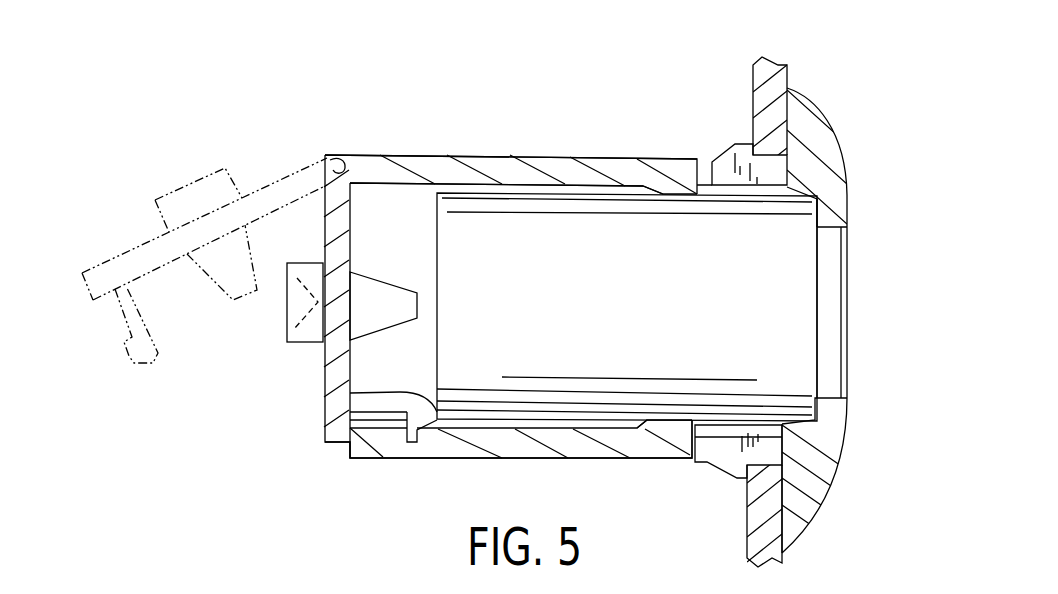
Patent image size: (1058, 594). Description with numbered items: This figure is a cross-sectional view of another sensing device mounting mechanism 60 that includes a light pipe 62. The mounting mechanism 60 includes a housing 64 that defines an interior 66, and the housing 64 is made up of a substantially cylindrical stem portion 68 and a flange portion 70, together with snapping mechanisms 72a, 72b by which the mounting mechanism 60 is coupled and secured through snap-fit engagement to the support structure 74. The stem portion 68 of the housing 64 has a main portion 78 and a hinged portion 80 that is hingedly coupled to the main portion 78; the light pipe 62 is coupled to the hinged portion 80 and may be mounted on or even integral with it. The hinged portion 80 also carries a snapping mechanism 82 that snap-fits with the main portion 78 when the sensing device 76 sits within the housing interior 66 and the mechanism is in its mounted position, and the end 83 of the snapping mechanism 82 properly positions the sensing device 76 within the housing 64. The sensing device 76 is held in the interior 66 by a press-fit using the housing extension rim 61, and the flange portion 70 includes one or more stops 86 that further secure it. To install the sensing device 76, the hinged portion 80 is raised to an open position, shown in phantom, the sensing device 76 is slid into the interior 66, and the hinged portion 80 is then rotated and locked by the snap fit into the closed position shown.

The sensing device mounting mechanism 60 is at (376, 106).
The housing extension rim 61 is at (663, 196).
The light pipe 62 is at (300, 343).
The housing 64 is at (490, 176).
The interior 66 is at (404, 247).
The stem portion 68 is at (428, 155).
The flange portion 70 is at (822, 135).
The snapping mechanism 72a is at (726, 172).
The snapping mechanism 72b is at (717, 455).
The support structure 74 is at (778, 75).
The sensing device 76 is at (558, 298).
The main portion 78 is at (566, 177).
The hinged portion 80 is at (326, 411).
The snapping mechanism 82 is at (420, 445).
The end 83 is at (335, 394).
The stop 86 is at (817, 218).